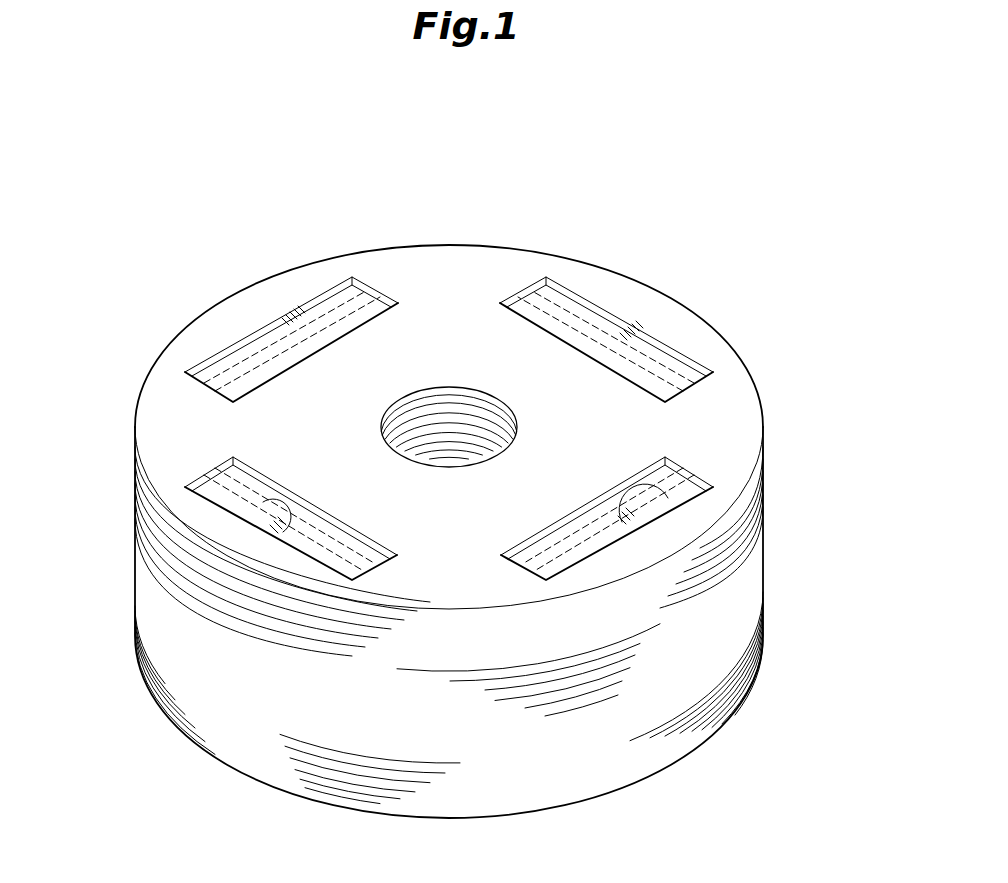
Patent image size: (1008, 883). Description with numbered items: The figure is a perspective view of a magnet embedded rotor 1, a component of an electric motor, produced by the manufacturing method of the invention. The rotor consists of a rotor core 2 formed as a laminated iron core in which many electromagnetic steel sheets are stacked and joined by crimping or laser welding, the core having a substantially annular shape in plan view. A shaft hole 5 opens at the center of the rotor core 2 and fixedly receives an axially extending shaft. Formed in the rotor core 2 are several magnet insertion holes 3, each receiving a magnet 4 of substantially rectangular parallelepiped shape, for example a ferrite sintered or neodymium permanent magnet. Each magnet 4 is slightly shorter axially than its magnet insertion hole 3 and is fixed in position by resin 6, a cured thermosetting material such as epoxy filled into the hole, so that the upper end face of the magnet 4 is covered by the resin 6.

The magnet embedded rotor 1 is at (694, 186).
The rotor core 2 is at (706, 318).
The magnet insertion hole 3 is at (300, 320).
The magnet 4 is at (265, 500).
The shaft hole 5 is at (455, 420).
The resin 6 is at (338, 330).